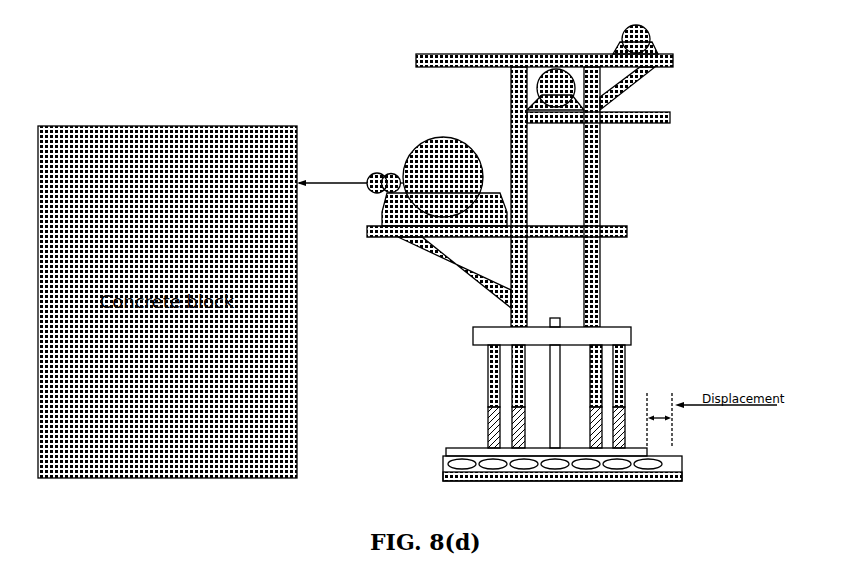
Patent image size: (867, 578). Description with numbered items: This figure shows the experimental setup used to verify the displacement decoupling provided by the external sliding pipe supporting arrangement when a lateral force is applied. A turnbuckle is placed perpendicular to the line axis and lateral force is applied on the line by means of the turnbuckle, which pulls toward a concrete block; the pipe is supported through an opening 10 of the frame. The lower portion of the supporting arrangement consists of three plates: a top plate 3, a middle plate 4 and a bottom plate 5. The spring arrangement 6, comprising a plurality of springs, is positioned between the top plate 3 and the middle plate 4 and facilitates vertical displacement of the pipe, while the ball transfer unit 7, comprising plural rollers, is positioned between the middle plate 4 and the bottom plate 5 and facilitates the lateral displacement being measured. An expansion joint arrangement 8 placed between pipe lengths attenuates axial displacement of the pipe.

The top plate 3 is at (635, 334).
The middle plate 4 is at (652, 452).
The bottom plate 5 is at (440, 477).
The spring arrangement 6 is at (630, 379).
The ball transfer unit 7 is at (655, 466).
The expansion joint arrangement 8 is at (561, 428).
The openings 10 is at (375, 160).